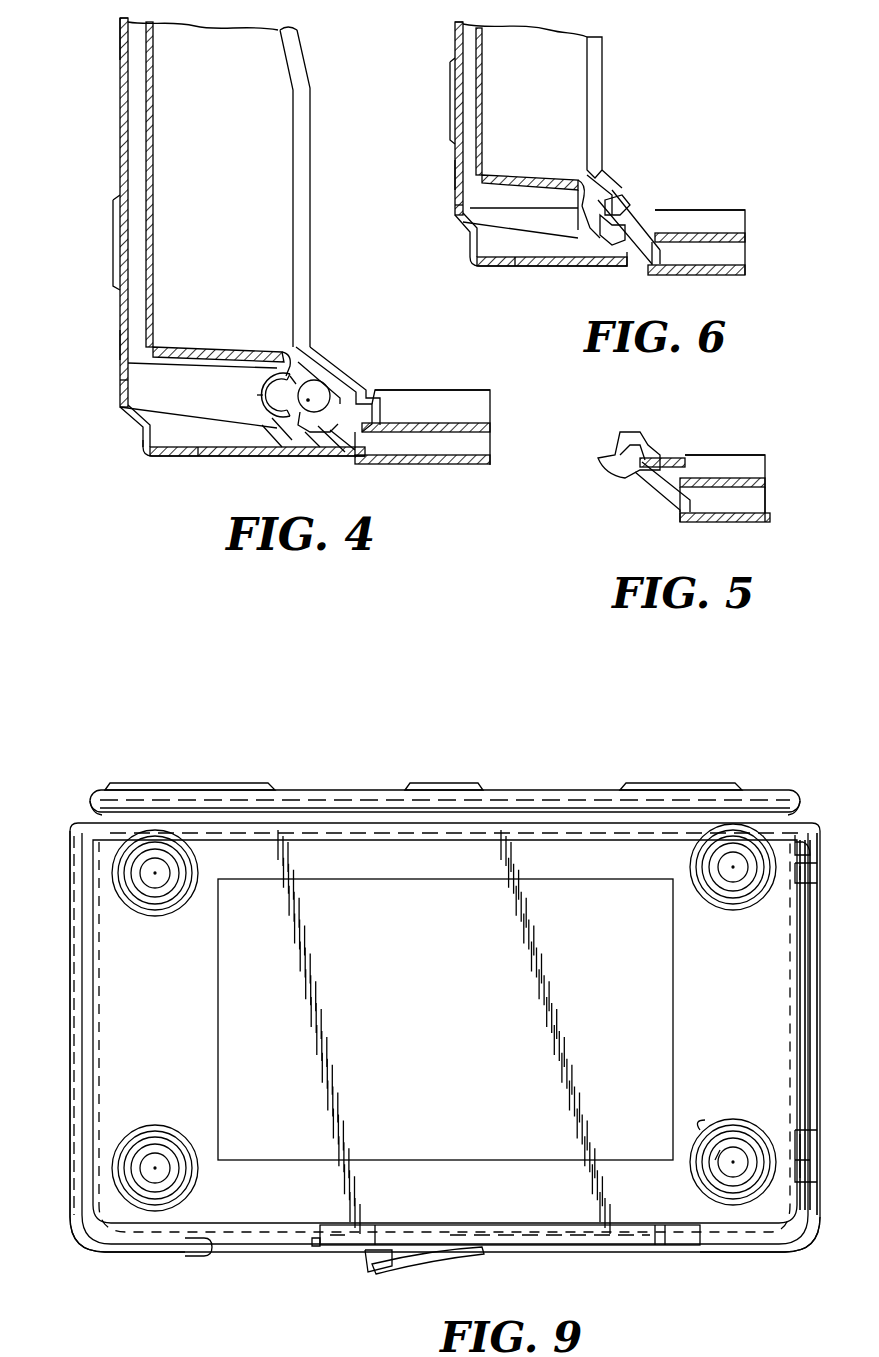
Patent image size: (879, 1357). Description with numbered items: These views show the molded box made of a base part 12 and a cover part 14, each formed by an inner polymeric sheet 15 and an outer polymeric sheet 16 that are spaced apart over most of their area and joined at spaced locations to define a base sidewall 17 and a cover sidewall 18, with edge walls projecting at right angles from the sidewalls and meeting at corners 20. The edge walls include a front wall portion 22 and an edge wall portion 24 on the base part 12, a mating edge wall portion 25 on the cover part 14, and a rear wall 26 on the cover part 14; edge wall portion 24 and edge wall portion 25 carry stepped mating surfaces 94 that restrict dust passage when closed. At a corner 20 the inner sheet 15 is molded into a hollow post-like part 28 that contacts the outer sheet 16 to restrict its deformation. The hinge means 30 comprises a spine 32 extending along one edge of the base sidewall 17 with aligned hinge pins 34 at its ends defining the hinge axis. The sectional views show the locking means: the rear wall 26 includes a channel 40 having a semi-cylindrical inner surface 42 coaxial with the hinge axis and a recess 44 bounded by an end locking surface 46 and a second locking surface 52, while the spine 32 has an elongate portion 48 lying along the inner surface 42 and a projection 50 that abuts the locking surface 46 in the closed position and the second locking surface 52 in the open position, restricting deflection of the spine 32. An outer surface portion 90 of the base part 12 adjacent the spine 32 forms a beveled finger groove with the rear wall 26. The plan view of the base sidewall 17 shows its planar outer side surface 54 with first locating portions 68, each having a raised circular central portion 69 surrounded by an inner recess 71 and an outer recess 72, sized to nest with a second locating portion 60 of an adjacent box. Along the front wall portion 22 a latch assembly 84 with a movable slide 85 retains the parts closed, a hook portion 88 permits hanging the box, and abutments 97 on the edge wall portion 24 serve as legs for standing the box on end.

In FIG. 4, the base part 12 is at (484, 389).
In FIG. 6, the base part 12 is at (752, 210).
In FIG. 5, the base part 12 is at (767, 451).
In FIG. 9, the base part 12 is at (826, 947).
In FIG. 4, the cover part 14 is at (305, 32).
In FIG. 6, the cover part 14 is at (608, 43).
In FIG. 4, the inner polymeric sheet 15 is at (154, 205).
In FIG. 6, the inner polymeric sheet 15 is at (515, 177).
In FIG. 5, the inner polymeric sheet 15 is at (770, 479).
In FIG. 4, the outer polymeric sheet 16 is at (120, 346).
In FIG. 6, the outer polymeric sheet 16 is at (455, 174).
In FIG. 5, the outer polymeric sheet 16 is at (770, 525).
In FIG. 4, the base sidewall 17 is at (486, 467).
In FIG. 6, the base sidewall 17 is at (748, 271).
In FIG. 5, the base sidewall 17 is at (720, 525).
In FIG. 9, the base sidewall 17 is at (488, 1015).
In FIG. 4, the cover sidewall 18 is at (120, 84).
In FIG. 6, the cover sidewall 18 is at (455, 34).
In FIG. 4, the corner 20 is at (146, 460).
In FIG. 9, the corner 20 is at (84, 1250).
In FIG. 9, the front wall portion 22 is at (150, 1262).
In FIG. 4, the edge wall portion 24 is at (436, 390).
In FIG. 6, the edge wall portion 24 is at (746, 225).
In FIG. 5, the edge wall portion 24 is at (730, 456).
In FIG. 9, the edge wall portion 24 is at (70, 1063).
In FIG. 4, the edge wall portion 25 is at (230, 128).
In FIG. 6, the edge wall portion 25 is at (548, 76).
In FIG. 4, the rear wall 26 is at (198, 459).
In FIG. 6, the rear wall 26 is at (515, 268).
In FIG. 4, the hollow post-like part 28 is at (140, 390).
In FIG. 6, the hollow post-like part 28 is at (468, 218).
In FIG. 4, the hinge means 30 is at (330, 356).
In FIG. 6, the hinge means 30 is at (620, 185).
In FIG. 4, the spine 32 is at (300, 433).
In FIG. 6, the spine 32 is at (624, 201).
In FIG. 9, the spine 32 is at (357, 790).
In FIG. 9, the hinge pin 34 is at (92, 798).
In FIG. 4, the channel 40 is at (268, 380).
In FIG. 6, the channel 40 is at (576, 193).
In FIG. 6, the semi-cylindrical inner surface 42 is at (590, 234).
In FIG. 4, the recess 44 is at (272, 430).
In FIG. 4, the end locking surface 46 is at (312, 442).
In FIG. 6, the elongate portion 48 is at (614, 249).
In FIG. 5, the elongate portion 48 is at (616, 481).
In FIG. 9, the elongate portion 48 is at (663, 783).
In FIG. 4, the projection 50 is at (257, 399).
In FIG. 9, the projection 50 is at (457, 783).
In FIG. 4, the second locking surface 52 is at (278, 372).
In FIG. 9, the outer side surface 54 is at (746, 990).
In FIG. 4, the second locating portion 60 is at (114, 232).
In FIG. 6, the second locating portion 60 is at (451, 94).
In FIG. 9, the first locating portion 68 is at (198, 862).
In FIG. 9, the raised circular central portion 69 is at (158, 883).
In FIG. 9, the inner recess 71 is at (712, 1161).
In FIG. 9, the outer recess 72 is at (700, 1143).
In FIG. 9, the latch assembly 84 is at (668, 1250).
In FIG. 9, the slide 85 is at (484, 1256).
In FIG. 9, the hook portion 88 is at (206, 1259).
In FIG. 6, the outer surface portion 90 is at (646, 267).
In FIG. 4, the stepped mating surface 94 is at (311, 138).
In FIG. 6, the stepped mating surface 94 is at (603, 107).
In FIG. 9, the abutment 97 is at (822, 868).